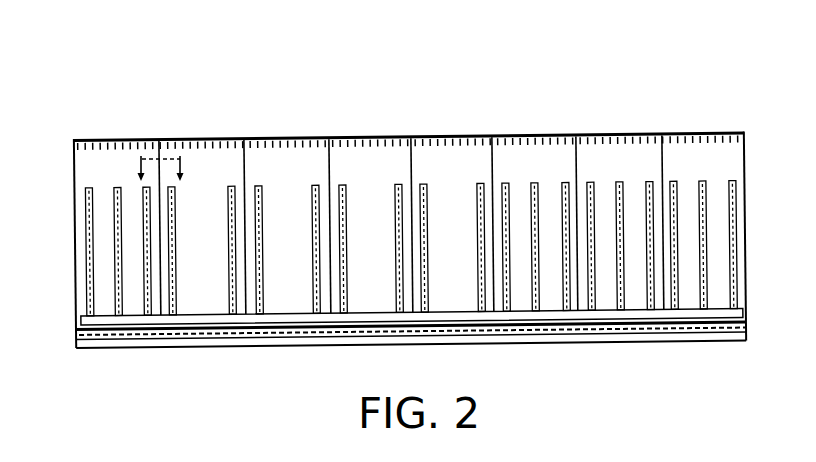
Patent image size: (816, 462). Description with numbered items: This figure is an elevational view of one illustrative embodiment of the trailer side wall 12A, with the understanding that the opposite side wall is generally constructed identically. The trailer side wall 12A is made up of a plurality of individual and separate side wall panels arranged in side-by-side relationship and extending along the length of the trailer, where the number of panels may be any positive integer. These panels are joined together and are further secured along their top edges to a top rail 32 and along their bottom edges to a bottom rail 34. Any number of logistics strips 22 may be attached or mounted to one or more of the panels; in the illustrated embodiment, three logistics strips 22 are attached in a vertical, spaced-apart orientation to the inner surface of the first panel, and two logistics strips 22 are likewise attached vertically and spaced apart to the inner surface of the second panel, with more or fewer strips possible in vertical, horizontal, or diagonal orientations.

The trailer side wall 12A is at (596, 90).
The logistics strip 22 is at (143, 228).
The top rail 32 is at (293, 137).
The bottom rail 34 is at (77, 335).